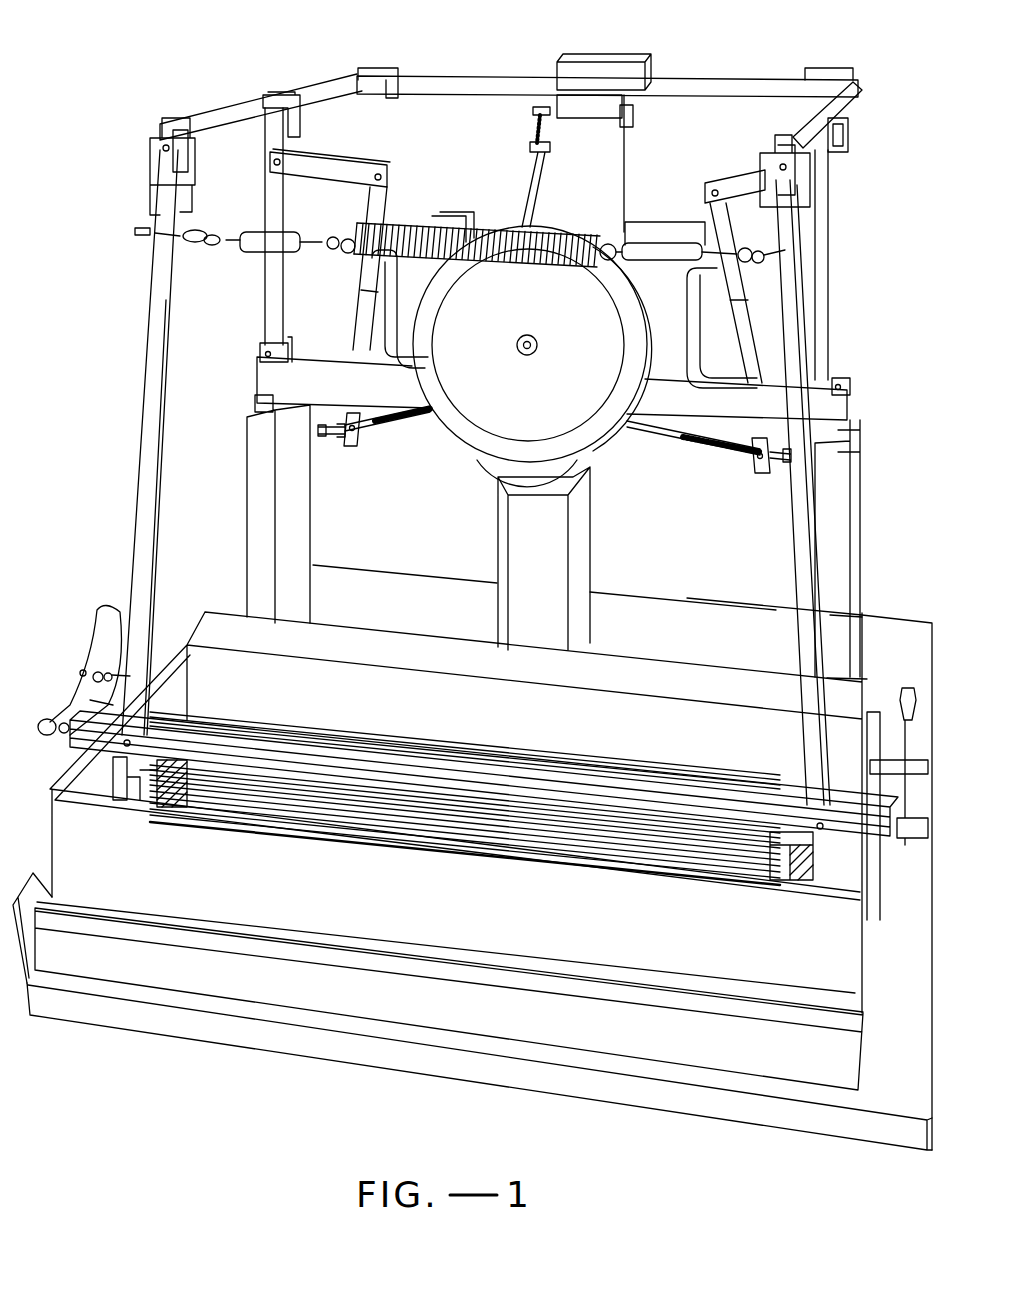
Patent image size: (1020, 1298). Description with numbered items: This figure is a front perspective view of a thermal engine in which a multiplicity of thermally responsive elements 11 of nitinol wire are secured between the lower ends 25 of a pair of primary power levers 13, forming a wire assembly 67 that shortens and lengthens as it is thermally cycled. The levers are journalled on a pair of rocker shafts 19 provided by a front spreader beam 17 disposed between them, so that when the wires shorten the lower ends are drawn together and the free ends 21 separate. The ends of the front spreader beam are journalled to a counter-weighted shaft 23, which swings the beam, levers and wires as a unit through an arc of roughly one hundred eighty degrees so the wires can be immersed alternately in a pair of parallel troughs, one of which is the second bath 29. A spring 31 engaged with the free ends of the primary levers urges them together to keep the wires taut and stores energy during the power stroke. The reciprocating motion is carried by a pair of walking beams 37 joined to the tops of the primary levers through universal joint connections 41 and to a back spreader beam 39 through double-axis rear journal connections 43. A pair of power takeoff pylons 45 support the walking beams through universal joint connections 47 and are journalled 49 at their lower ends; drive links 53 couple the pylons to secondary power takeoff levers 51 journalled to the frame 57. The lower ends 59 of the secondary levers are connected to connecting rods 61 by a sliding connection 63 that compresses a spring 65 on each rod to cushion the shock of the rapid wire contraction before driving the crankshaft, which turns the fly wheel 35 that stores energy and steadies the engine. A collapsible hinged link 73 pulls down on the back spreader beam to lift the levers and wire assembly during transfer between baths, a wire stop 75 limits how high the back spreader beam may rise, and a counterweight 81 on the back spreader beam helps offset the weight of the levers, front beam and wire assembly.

The thermally responsive elements 11 is at (352, 838).
The primary power levers 13 is at (91, 534).
The front spreader beam 17 is at (475, 775).
The rocker shafts 19 is at (162, 740).
The free ends 21 is at (150, 327).
The counter-weighted shaft 23 is at (100, 655).
The lower ends 25 is at (118, 779).
The second bath 29 is at (318, 717).
The spring 31 is at (448, 215).
The fly wheel 35 is at (485, 437).
The walking beams 37 is at (228, 118).
The back spreader beam 39 is at (476, 77).
The journal connection 41 is at (165, 133).
The rear journal connections 43 is at (384, 68).
The power takeoff pylons 45 is at (268, 292).
The journal connections 47 is at (268, 92).
The lower journals 49 is at (265, 352).
The secondary power takeoff levers 51 is at (388, 197).
The drive links 53 is at (345, 163).
The frame 57 is at (345, 397).
The lower ends 59 is at (360, 426).
The connecting rods 61 is at (330, 440).
The sliding connection 63 is at (350, 436).
The spring 65 is at (413, 413).
The wire assembly 67 is at (445, 832).
The collapsible hinged link 73 is at (546, 191).
The wire stop 75 is at (620, 148).
The counterweight 81 is at (612, 58).